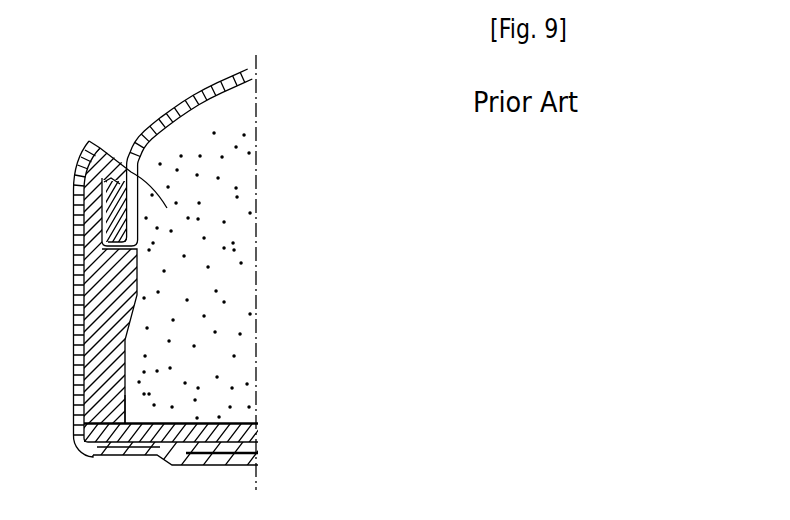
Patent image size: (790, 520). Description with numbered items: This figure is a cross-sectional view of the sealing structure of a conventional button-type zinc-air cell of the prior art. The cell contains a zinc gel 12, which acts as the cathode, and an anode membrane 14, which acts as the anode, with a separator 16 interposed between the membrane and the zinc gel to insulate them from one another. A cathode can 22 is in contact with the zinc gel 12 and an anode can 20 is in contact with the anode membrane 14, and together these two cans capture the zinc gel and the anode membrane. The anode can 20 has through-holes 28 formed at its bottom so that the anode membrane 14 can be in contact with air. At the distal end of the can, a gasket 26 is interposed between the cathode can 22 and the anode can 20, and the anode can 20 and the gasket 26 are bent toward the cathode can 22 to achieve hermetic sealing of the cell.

The zinc gel 12 is at (94, 142).
The anode membrane 14 is at (102, 432).
The separator 16 is at (130, 413).
The anode can 20 is at (80, 320).
The cathode can 22 is at (170, 113).
The gasket 26 is at (110, 273).
The through-holes 28 is at (230, 458).